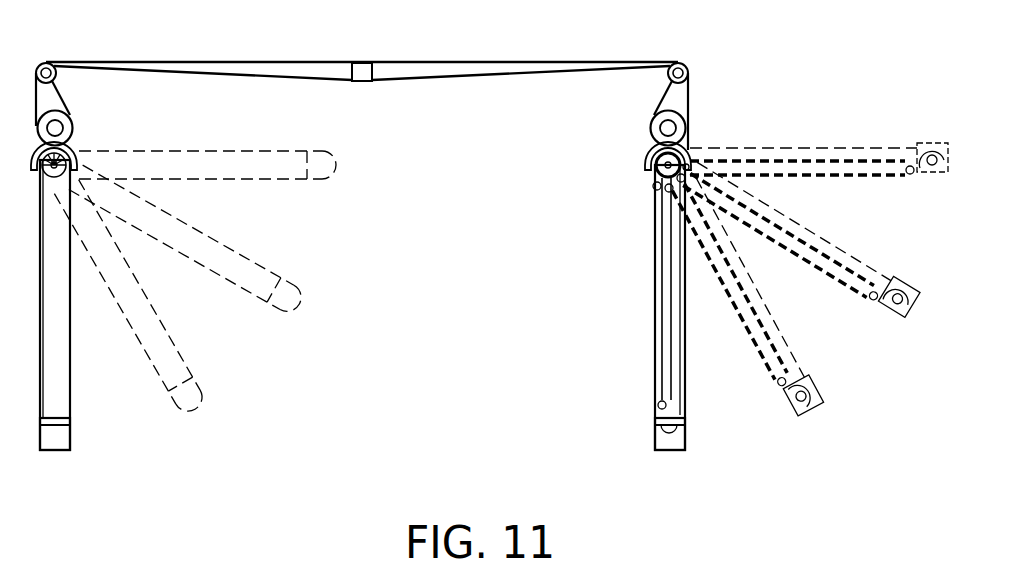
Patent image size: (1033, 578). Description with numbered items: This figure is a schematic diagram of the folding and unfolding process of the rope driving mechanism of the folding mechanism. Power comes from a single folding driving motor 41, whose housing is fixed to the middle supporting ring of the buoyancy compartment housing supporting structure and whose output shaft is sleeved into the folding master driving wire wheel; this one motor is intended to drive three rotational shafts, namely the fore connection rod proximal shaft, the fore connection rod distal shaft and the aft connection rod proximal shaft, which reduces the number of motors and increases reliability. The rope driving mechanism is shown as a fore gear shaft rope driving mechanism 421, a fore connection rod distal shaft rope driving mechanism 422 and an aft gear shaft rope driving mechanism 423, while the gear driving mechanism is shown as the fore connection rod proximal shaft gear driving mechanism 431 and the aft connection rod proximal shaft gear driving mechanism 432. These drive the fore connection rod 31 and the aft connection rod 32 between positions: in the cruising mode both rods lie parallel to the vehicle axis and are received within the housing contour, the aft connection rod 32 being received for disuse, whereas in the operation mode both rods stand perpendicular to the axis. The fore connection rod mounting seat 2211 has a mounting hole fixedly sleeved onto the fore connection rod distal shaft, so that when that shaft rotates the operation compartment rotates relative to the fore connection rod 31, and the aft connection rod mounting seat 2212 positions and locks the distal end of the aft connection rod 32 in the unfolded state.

The folding driving motor 41 is at (362, 74).
The fore gear shaft rope driving mechanism 421 is at (457, 62).
The aft gear shaft rope driving mechanism 423 is at (258, 62).
The fore connection rod proximal shaft gear driving mechanism 431 is at (653, 181).
The aft connection rod proximal shaft gear driving mechanism 432 is at (75, 142).
The fore connection rod distal shaft rope driving mechanism 422 is at (653, 275).
The fore connection rod 31 is at (678, 371).
The aft connection rod 32 is at (57, 318).
The fore connection rod mounting seat 2211 is at (663, 443).
The aft connection rod mounting seat 2212 is at (57, 437).